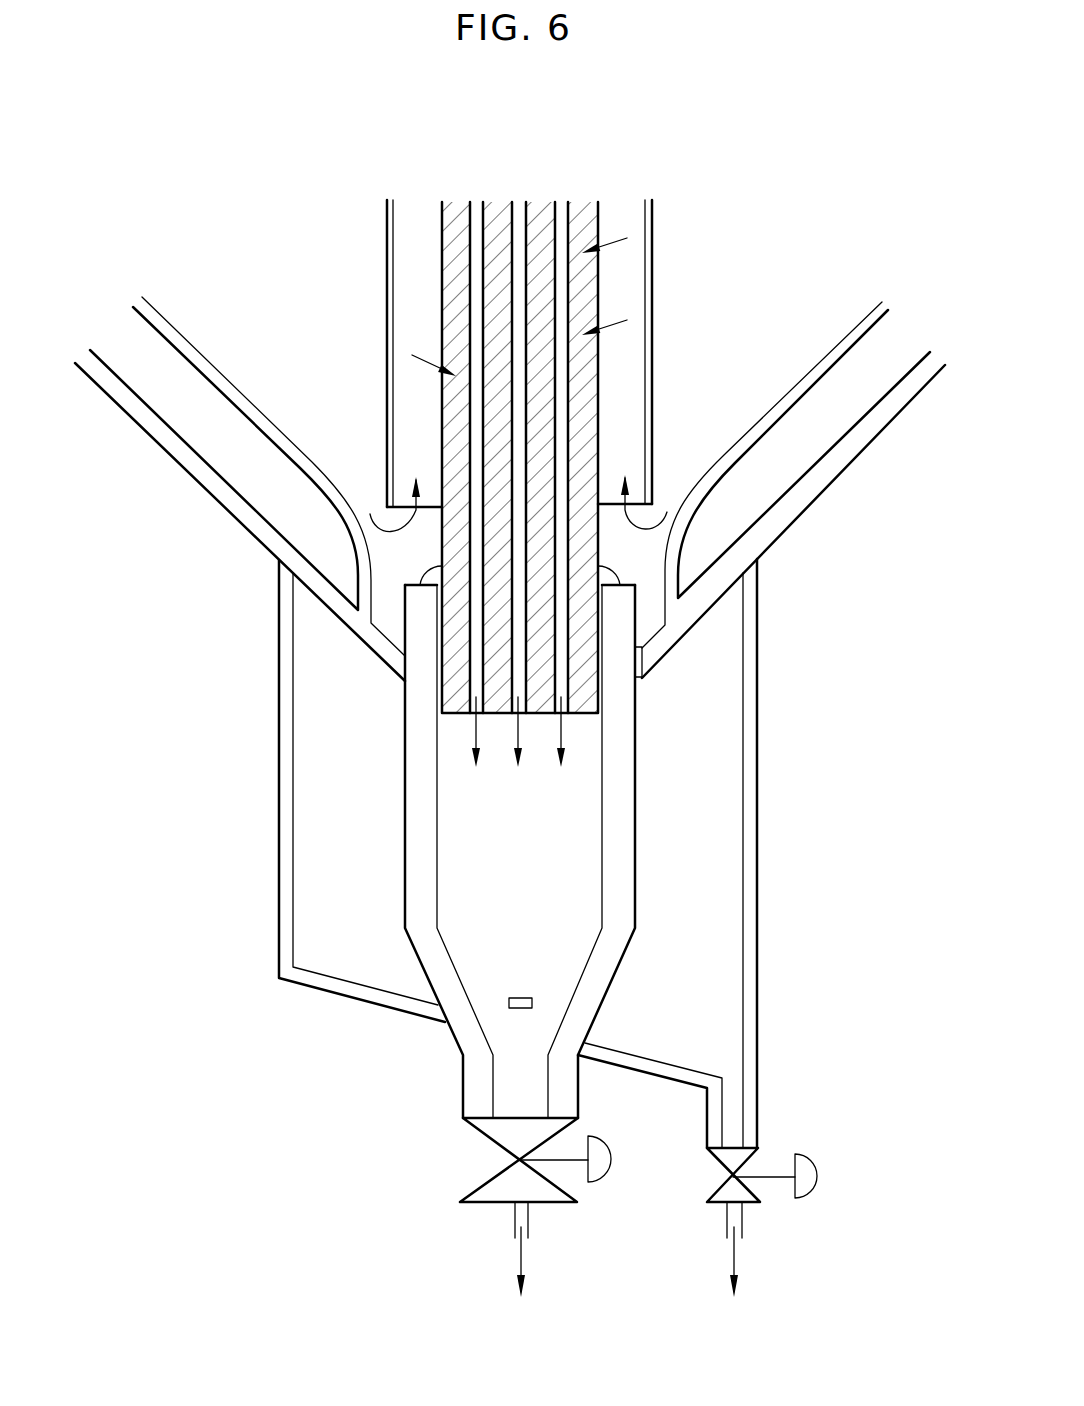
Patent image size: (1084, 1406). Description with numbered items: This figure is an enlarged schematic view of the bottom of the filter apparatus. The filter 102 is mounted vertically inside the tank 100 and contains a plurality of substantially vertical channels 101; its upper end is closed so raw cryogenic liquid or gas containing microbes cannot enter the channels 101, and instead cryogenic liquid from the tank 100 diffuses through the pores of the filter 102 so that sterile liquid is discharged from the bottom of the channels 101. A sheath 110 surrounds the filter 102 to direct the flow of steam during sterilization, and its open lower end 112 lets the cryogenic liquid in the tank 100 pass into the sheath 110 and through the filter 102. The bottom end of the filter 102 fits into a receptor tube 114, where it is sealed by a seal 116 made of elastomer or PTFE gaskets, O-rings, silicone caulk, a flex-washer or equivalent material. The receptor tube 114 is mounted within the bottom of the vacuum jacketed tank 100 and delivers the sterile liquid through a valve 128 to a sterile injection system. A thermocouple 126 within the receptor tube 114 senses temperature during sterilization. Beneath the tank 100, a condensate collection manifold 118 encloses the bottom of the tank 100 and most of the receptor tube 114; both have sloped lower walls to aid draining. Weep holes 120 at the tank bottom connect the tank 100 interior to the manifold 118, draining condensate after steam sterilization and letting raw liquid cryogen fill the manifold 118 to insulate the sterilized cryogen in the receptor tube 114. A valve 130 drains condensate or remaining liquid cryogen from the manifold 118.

The tank 100 is at (176, 514).
The channels 101 is at (558, 222).
The filter 102 is at (594, 390).
The sheath 110 is at (652, 278).
The open lower end 112 is at (407, 506).
The receptor tube 114 is at (618, 806).
The seal 116 is at (612, 564).
The condensate collection manifold 118 is at (753, 873).
The weep holes 120 is at (640, 678).
The thermocouple 126 is at (532, 1002).
The valve 128 is at (607, 1168).
The valve 130 is at (815, 1187).